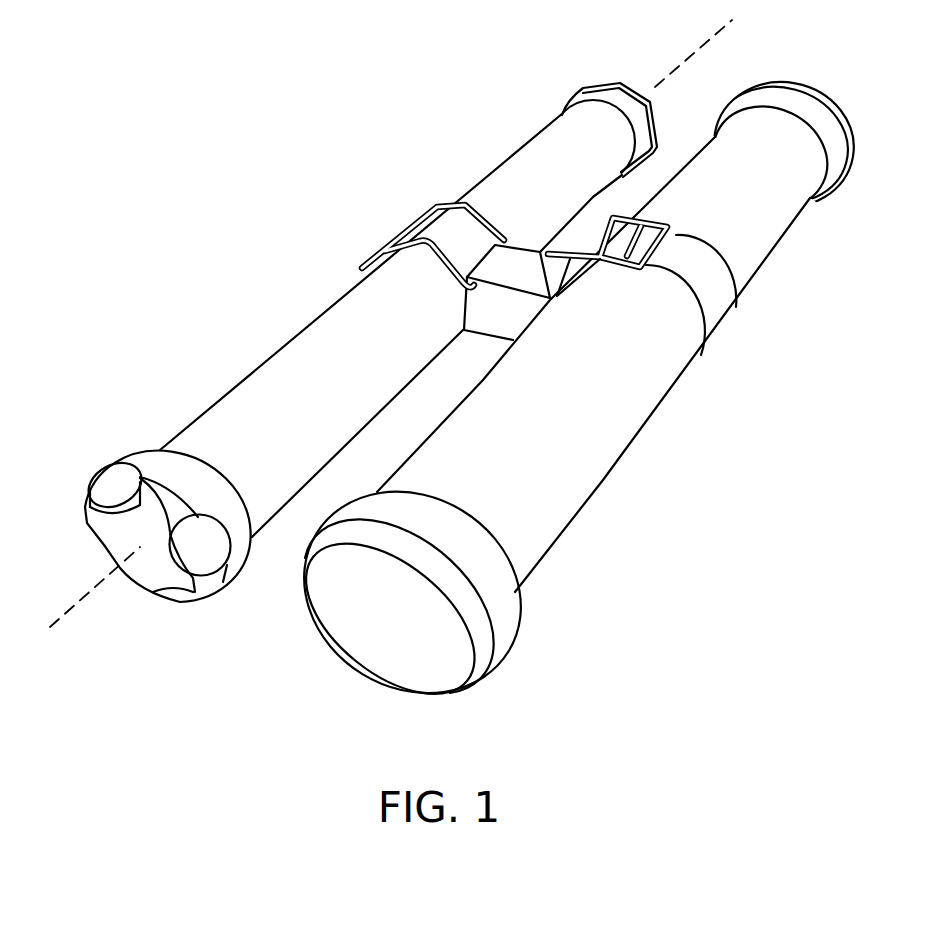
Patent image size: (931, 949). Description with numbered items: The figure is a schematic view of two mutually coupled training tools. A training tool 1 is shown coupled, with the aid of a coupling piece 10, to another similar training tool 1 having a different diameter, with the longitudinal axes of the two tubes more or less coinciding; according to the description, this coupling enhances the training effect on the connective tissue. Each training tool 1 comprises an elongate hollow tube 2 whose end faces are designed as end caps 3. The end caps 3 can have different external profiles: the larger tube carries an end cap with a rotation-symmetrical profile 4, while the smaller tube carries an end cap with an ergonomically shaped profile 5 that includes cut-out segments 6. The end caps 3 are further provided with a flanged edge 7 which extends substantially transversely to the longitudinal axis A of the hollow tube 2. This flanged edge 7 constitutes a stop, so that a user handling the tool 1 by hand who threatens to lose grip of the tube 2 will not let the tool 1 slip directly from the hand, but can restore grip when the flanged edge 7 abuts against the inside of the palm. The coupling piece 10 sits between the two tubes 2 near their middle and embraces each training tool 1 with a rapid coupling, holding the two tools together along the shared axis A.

The training tool 1 is at (452, 370).
The elongate hollow tube 2 is at (335, 328).
The end cap 3 is at (452, 370).
The rotation-symmetrical profile 4 is at (480, 640).
The ergonomically shaped profile 5 is at (168, 512).
The cut-out segment 6 is at (115, 493).
The flanged edge 7 is at (510, 567).
The coupling piece 10 is at (529, 267).
The longitudinal axis A is at (380, 335).